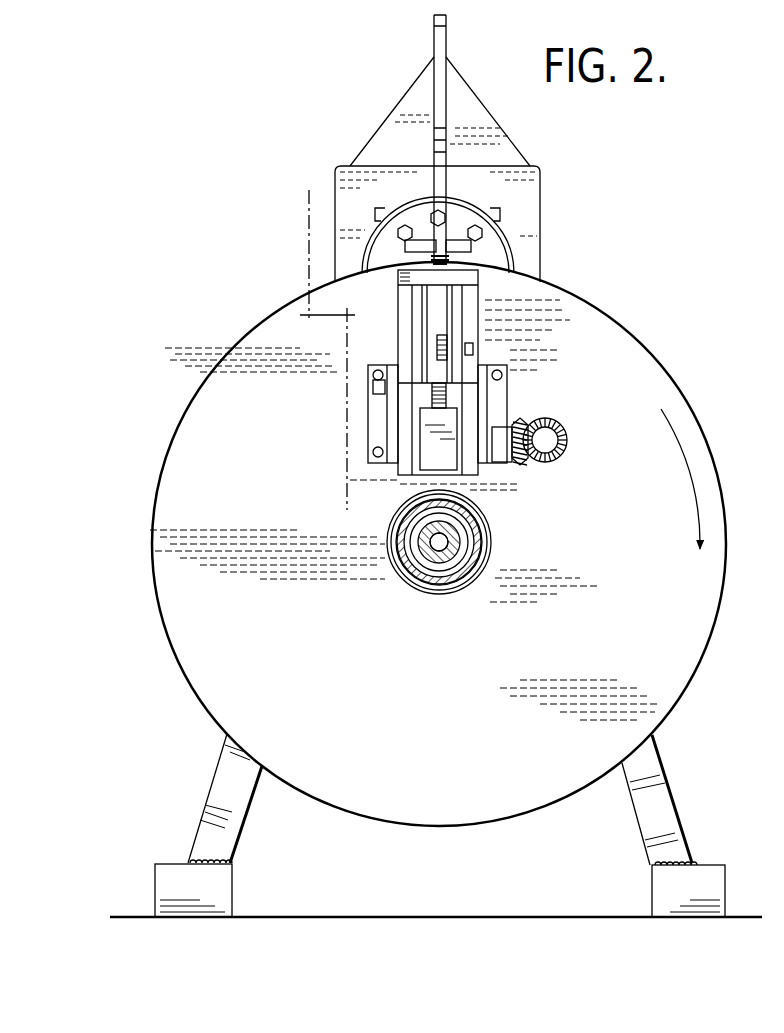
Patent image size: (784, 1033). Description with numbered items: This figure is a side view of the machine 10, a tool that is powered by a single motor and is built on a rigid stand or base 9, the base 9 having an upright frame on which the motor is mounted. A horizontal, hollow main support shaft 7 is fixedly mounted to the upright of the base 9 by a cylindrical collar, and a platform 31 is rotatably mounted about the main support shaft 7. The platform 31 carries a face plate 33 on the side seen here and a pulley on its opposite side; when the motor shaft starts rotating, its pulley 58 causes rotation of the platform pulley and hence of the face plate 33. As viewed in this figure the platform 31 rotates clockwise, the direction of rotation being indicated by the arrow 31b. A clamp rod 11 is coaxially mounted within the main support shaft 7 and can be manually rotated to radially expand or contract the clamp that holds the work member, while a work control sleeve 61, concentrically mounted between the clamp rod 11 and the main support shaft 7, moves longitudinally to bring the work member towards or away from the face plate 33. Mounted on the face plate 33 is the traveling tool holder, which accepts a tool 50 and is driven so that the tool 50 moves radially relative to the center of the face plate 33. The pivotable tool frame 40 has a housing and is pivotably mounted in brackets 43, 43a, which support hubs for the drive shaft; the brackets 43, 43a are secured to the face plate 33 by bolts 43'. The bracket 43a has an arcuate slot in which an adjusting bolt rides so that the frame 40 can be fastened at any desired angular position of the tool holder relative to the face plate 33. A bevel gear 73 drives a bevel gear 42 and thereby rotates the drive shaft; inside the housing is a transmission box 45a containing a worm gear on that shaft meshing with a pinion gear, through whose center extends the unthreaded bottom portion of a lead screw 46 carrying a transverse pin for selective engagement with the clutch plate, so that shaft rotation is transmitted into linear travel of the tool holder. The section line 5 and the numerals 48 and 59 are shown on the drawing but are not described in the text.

The section line 5- 5 is at (310, 212).
The main support shaft 7 is at (432, 577).
The stand or base 9 is at (527, 193).
The machine 10 is at (610, 285).
The clamp rod 11 is at (430, 552).
The platform 31 is at (690, 399).
The arrows 31b is at (693, 488).
The face plate 33 is at (615, 620).
The pivotable tool frame 40 is at (395, 307).
The bevel gear 42 is at (527, 463).
The bracket 43 is at (520, 414).
The bolts 43' is at (528, 360).
The bracket 43a is at (392, 432).
The transmission box 45a is at (427, 452).
The lead screw 46 is at (432, 396).
The guide post 48 is at (457, 305).
The tool 50 is at (437, 339).
The pulley 58 is at (412, 212).
The cover plate rim 59 is at (507, 226).
The work control sleeve 61 is at (472, 542).
The bevel gear 73 is at (567, 432).